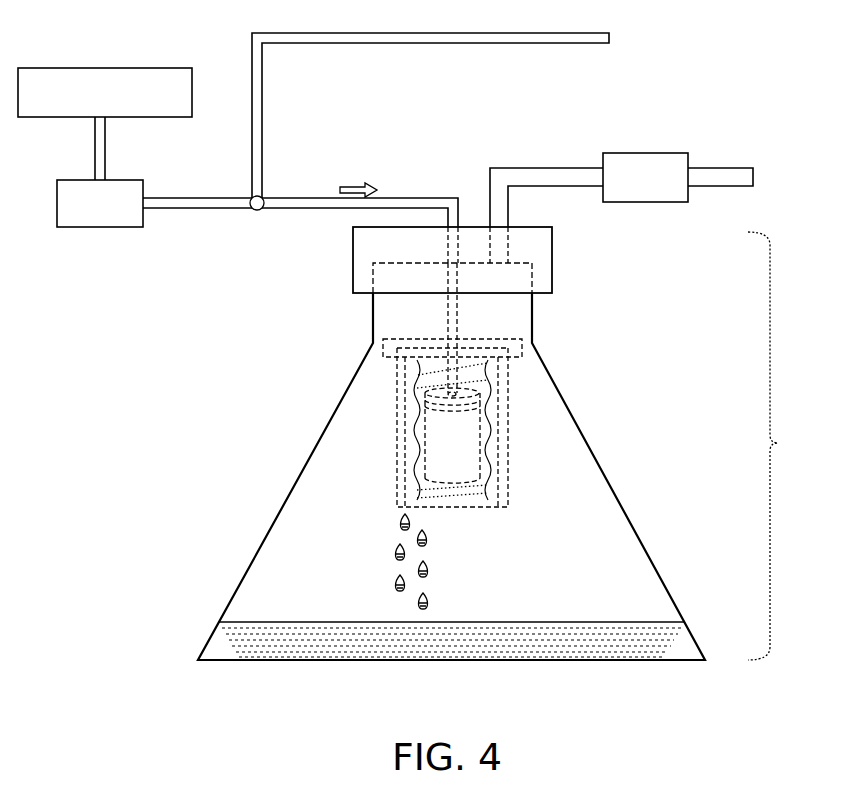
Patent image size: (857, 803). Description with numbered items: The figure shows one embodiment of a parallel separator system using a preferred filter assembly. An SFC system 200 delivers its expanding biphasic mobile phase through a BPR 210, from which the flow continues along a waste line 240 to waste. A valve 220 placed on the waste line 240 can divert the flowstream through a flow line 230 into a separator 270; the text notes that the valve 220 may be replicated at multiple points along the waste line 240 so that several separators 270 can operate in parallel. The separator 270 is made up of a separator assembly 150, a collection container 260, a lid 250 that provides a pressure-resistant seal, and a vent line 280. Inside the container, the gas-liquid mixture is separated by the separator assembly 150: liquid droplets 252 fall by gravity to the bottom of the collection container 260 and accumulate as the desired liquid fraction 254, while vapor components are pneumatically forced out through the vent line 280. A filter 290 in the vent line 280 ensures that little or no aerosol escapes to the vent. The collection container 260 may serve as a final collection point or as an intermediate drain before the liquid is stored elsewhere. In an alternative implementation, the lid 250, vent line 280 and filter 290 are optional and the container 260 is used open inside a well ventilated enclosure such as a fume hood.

The separator assembly 150 is at (508, 430).
The SFC system 200 is at (108, 68).
The back pressure regulator (BPR) 210 is at (140, 180).
The valve 220 is at (253, 212).
The inlet line 230 is at (282, 208).
The waste line 240 is at (440, 43).
The lid 250 is at (552, 262).
The liquid droplets 252 is at (431, 573).
The liquid fraction 254 is at (218, 640).
The collection container 260 is at (608, 482).
The separator 270 is at (790, 446).
The vent line 280 is at (518, 168).
The filter 290 is at (645, 153).